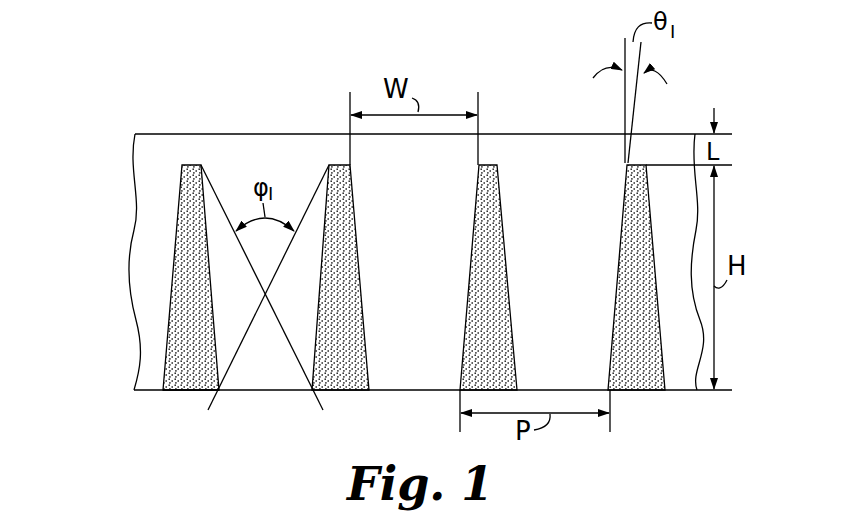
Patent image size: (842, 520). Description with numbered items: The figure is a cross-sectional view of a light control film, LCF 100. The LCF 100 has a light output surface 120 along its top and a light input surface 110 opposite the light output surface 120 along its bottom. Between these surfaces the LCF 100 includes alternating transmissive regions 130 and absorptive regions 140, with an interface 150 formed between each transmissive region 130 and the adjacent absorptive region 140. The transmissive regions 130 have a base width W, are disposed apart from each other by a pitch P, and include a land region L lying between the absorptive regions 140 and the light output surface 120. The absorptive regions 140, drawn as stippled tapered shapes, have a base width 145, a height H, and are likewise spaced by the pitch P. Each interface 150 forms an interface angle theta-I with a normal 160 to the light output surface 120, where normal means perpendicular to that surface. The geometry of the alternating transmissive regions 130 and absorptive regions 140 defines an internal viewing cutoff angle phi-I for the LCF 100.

The LCF 100 is at (195, 105).
The light input surface 110 is at (268, 392).
The light output surface 120 is at (320, 133).
The transmissive regions 130 is at (227, 337).
The absorptive regions 140 is at (187, 282).
The base width 145 is at (185, 392).
The interface 150 is at (618, 261).
The normal 160 is at (625, 105).